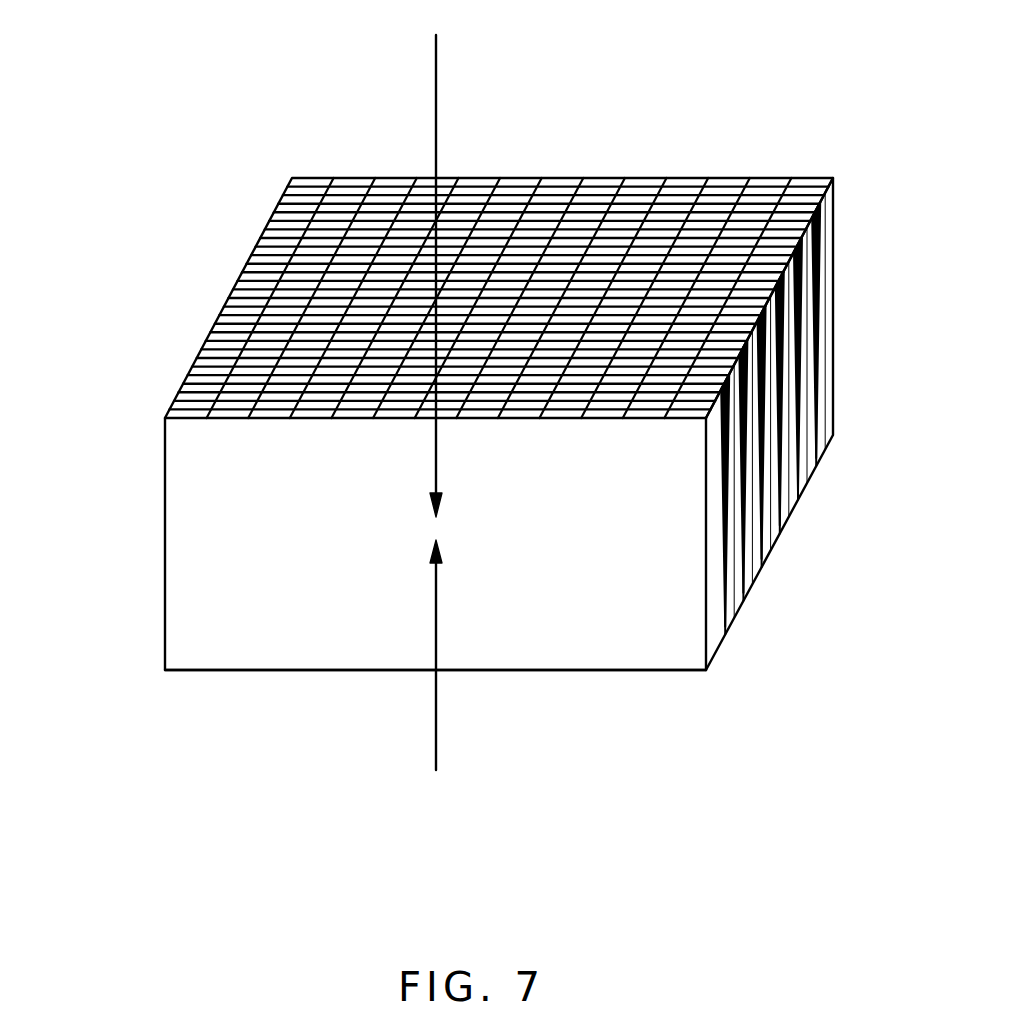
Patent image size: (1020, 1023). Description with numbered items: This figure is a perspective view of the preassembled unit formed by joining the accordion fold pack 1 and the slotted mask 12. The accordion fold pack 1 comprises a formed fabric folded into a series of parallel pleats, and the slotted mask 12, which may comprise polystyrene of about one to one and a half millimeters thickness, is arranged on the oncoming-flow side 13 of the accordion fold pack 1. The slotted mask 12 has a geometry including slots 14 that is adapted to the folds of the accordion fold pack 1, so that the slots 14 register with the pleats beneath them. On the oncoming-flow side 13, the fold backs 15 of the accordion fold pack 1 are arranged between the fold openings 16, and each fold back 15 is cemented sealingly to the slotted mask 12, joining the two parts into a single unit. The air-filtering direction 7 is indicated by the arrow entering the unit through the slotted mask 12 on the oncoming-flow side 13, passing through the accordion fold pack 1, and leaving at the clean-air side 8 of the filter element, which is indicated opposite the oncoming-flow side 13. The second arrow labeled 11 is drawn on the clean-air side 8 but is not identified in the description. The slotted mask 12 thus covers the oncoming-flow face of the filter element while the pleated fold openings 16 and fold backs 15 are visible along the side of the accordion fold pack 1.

The accordion fold pack 1 is at (477, 453).
The air-filtering direction 7 is at (433, 58).
The clean-air side 8 is at (316, 761).
The transmitted light 11 is at (438, 755).
The slotted mask 12 is at (737, 320).
The oncoming-flow side 13 is at (617, 121).
The slots 14 is at (290, 213).
The fold backs 15 is at (753, 348).
The fold openings 16 is at (803, 461).